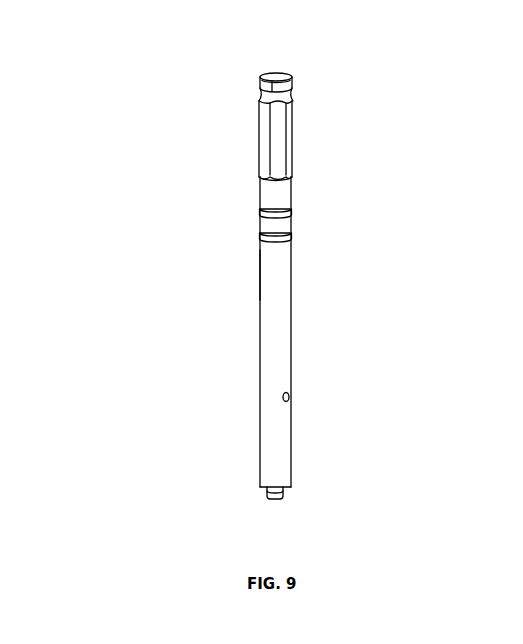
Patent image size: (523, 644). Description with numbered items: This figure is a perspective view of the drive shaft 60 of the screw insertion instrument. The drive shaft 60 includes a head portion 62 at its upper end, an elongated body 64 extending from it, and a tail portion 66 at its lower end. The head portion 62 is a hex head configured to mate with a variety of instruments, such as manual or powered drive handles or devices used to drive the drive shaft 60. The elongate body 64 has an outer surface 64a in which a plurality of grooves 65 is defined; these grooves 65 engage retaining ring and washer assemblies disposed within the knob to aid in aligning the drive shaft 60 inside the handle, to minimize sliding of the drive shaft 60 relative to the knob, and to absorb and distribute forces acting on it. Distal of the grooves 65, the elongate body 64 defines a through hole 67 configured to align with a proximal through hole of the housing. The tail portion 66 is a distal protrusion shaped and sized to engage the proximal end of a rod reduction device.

The drive shaft 60 is at (168, 113).
The head portion 62 is at (293, 83).
The elongated body 64 is at (260, 340).
The outer surface 64a is at (271, 285).
The grooves 65 is at (293, 211).
The tail portion 66 is at (285, 497).
The through hole 67 is at (290, 394).